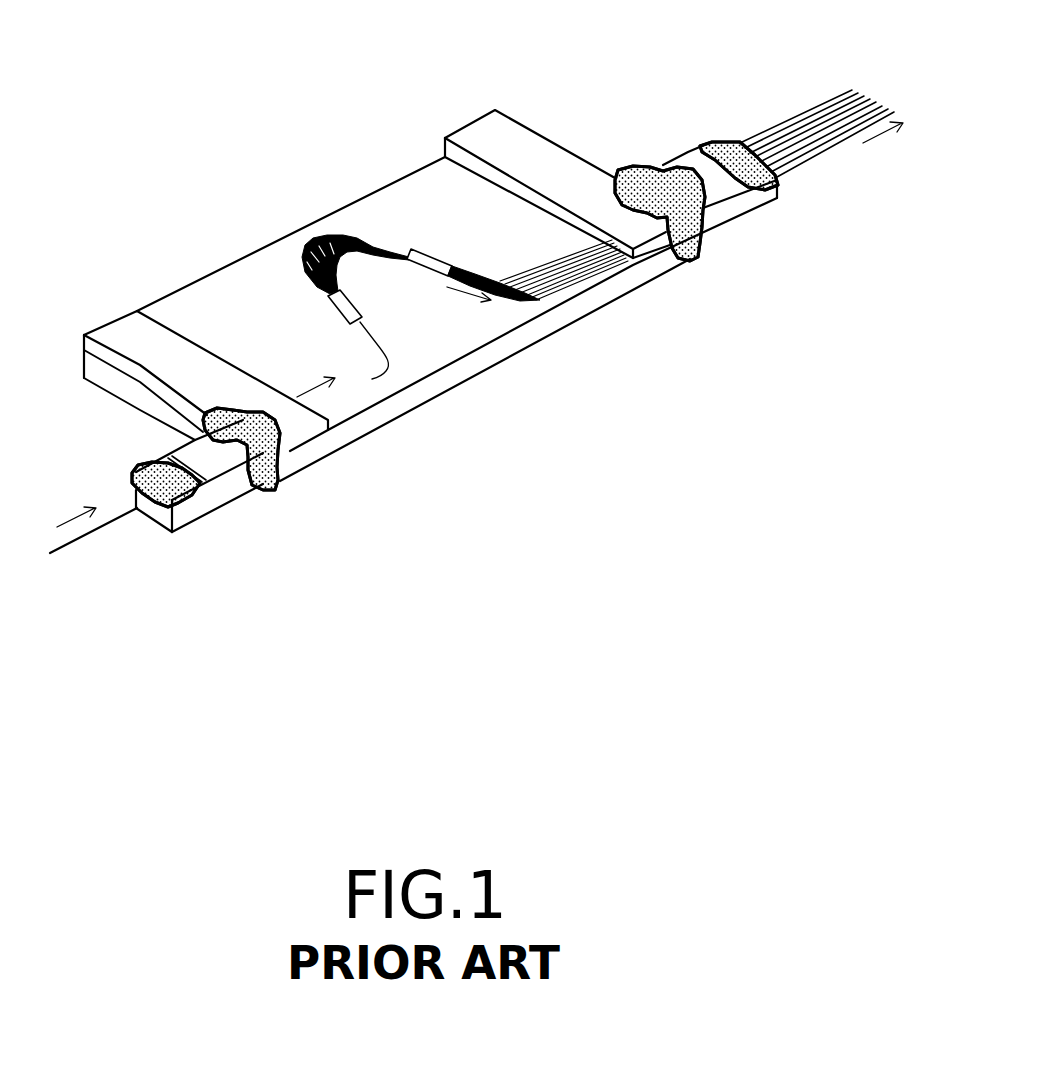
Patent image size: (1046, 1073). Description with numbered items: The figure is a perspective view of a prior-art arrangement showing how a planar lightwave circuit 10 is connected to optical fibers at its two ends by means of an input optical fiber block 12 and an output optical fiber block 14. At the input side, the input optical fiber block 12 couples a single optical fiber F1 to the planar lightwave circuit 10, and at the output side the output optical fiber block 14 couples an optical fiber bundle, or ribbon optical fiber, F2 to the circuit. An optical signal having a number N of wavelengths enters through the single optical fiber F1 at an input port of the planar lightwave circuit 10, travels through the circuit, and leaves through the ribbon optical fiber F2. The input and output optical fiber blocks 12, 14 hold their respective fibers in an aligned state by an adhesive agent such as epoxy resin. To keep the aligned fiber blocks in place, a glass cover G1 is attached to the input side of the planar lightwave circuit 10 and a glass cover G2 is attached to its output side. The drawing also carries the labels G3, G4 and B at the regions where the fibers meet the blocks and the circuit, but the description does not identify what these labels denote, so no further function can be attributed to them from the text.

The planar lightwave circuit 10 is at (507, 350).
The input optical fiber block 12 is at (203, 502).
The output optical fiber block 14 is at (738, 213).
The glass cover G1 is at (128, 325).
The glass cover G2 is at (490, 137).
The third guide G3 is at (230, 452).
The fourth guide G4 is at (687, 157).
The bonding portion B is at (140, 468).
The single optical fiber F1 is at (87, 537).
The optical fiber bundle F2 is at (805, 115).